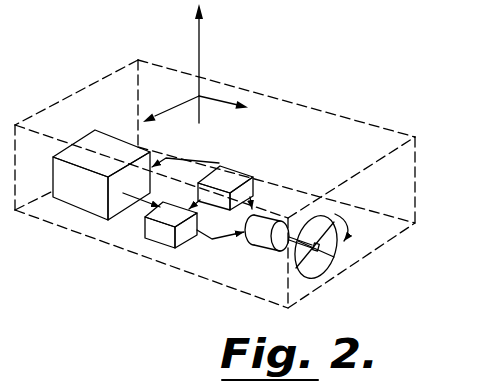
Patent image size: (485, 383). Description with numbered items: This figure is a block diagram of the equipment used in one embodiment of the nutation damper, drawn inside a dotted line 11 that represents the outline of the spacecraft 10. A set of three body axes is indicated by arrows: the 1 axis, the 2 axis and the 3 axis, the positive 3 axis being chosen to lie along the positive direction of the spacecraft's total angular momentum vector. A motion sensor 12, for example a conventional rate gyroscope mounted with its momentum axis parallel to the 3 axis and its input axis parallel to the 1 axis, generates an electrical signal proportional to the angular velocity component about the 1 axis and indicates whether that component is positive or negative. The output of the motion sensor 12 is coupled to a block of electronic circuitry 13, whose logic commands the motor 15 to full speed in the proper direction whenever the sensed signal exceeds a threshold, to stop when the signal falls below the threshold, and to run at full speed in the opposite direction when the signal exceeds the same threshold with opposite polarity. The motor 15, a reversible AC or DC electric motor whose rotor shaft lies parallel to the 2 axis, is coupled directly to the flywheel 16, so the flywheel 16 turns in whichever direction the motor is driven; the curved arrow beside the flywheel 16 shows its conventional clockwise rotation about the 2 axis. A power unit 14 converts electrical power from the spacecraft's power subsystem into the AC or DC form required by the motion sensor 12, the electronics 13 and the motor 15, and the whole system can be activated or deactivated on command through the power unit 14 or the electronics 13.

The 1 axis 1 is at (162, 118).
The 2 axis 2 is at (265, 122).
The 3 axis 3 is at (224, 20).
The spacecraft 10 is at (331, 113).
The dotted line 11 is at (420, 149).
The motion sensor 12 is at (93, 198).
The electronic circuitry 13 is at (157, 233).
The power unit 14 is at (243, 171).
The motor 15 is at (253, 239).
The flywheel 16 is at (331, 258).